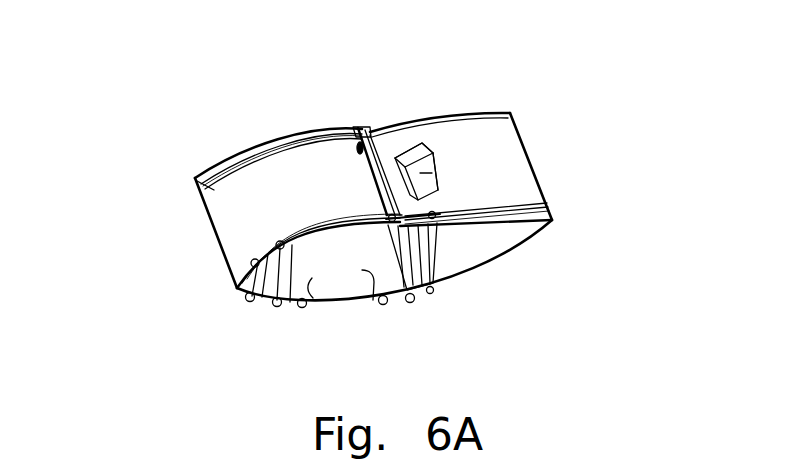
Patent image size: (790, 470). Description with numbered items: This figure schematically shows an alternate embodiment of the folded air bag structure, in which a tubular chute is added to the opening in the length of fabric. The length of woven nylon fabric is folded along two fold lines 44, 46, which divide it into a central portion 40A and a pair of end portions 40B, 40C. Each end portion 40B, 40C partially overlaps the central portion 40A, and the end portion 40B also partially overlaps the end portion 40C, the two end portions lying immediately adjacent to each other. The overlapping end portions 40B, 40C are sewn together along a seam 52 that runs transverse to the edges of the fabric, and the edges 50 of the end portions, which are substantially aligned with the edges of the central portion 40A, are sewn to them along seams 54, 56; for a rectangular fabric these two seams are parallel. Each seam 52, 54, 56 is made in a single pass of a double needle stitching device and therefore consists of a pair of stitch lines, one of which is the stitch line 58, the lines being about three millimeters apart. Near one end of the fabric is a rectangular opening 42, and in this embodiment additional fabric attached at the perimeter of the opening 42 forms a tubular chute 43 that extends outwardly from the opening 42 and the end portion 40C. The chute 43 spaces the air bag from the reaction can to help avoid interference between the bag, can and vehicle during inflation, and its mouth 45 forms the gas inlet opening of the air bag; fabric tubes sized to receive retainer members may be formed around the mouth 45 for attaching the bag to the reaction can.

The central portion 40A is at (332, 300).
The end portion 40B is at (220, 193).
The end portion 40C is at (534, 170).
The rectangular opening 42 is at (434, 173).
The tubular chute 43 is at (437, 155).
The fold line 44 is at (217, 242).
The mouth 45 is at (408, 143).
The fold line 46 is at (553, 219).
The edges 50 is at (426, 130).
The seam 52 is at (286, 124).
The seam 54 is at (352, 130).
The seam 56 is at (365, 228).
The stitch line 58 is at (500, 263).